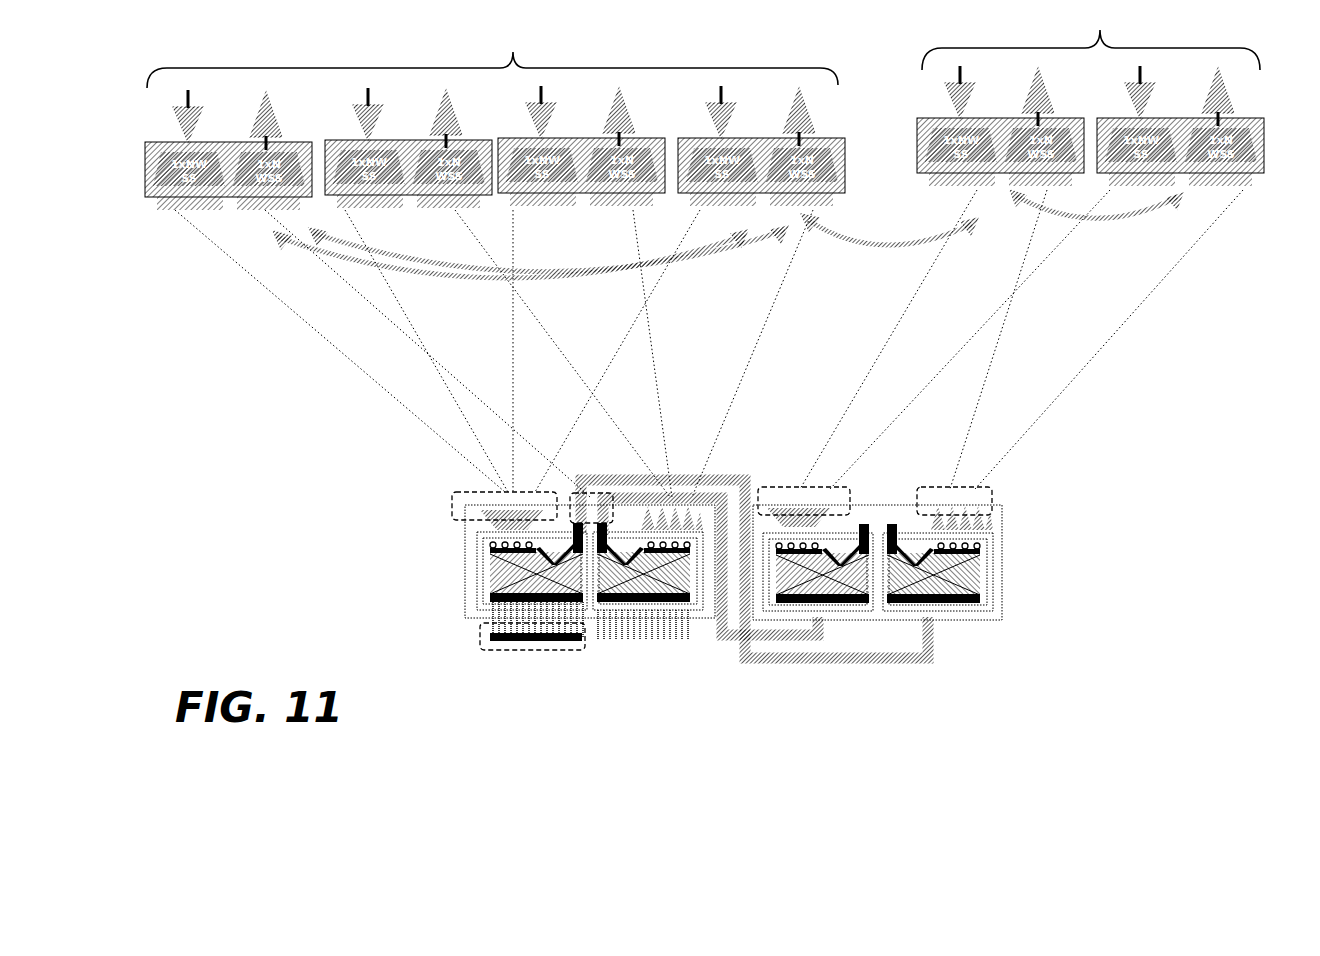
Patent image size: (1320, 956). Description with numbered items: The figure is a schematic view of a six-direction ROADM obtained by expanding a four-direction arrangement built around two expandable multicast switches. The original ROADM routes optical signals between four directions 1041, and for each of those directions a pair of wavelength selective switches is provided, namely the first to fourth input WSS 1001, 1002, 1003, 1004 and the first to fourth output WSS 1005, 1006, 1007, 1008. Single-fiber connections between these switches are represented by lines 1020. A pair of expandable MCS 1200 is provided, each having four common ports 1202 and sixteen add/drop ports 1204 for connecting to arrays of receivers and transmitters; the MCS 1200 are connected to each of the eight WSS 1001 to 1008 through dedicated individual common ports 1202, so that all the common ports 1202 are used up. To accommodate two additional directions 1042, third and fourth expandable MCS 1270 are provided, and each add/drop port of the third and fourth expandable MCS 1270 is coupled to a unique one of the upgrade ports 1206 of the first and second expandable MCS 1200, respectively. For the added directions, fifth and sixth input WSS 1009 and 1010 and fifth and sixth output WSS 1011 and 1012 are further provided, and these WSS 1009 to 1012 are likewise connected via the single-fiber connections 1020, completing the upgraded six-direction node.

The first input WSS 1001 is at (195, 237).
The second input WSS 1002 is at (379, 211).
The third input WSS 1003 is at (556, 209).
The fourth input WSS 1004 is at (723, 218).
The first output WSS 1005 is at (258, 222).
The second output WSS 1006 is at (452, 221).
The third output WSS 1007 is at (623, 212).
The fourth output WSS 1008 is at (796, 226).
The fifth input WSS 1009 is at (957, 200).
The sixth input WSS 1010 is at (1135, 198).
The fifth output WSS 1011 is at (1052, 198).
The sixth output WSS 1012 is at (1215, 198).
The single-fiber connections 1020 is at (622, 285).
The four directions 1041 is at (495, 109).
The two additional directions 1042 is at (1090, 88).
The expandable MCS 1200 is at (420, 576).
The common ports 1202 is at (452, 499).
The add/drop ports 1204 is at (480, 630).
The upgrade ports 1206 is at (593, 493).
The third and fourth expandable MCS 1270 is at (785, 677).